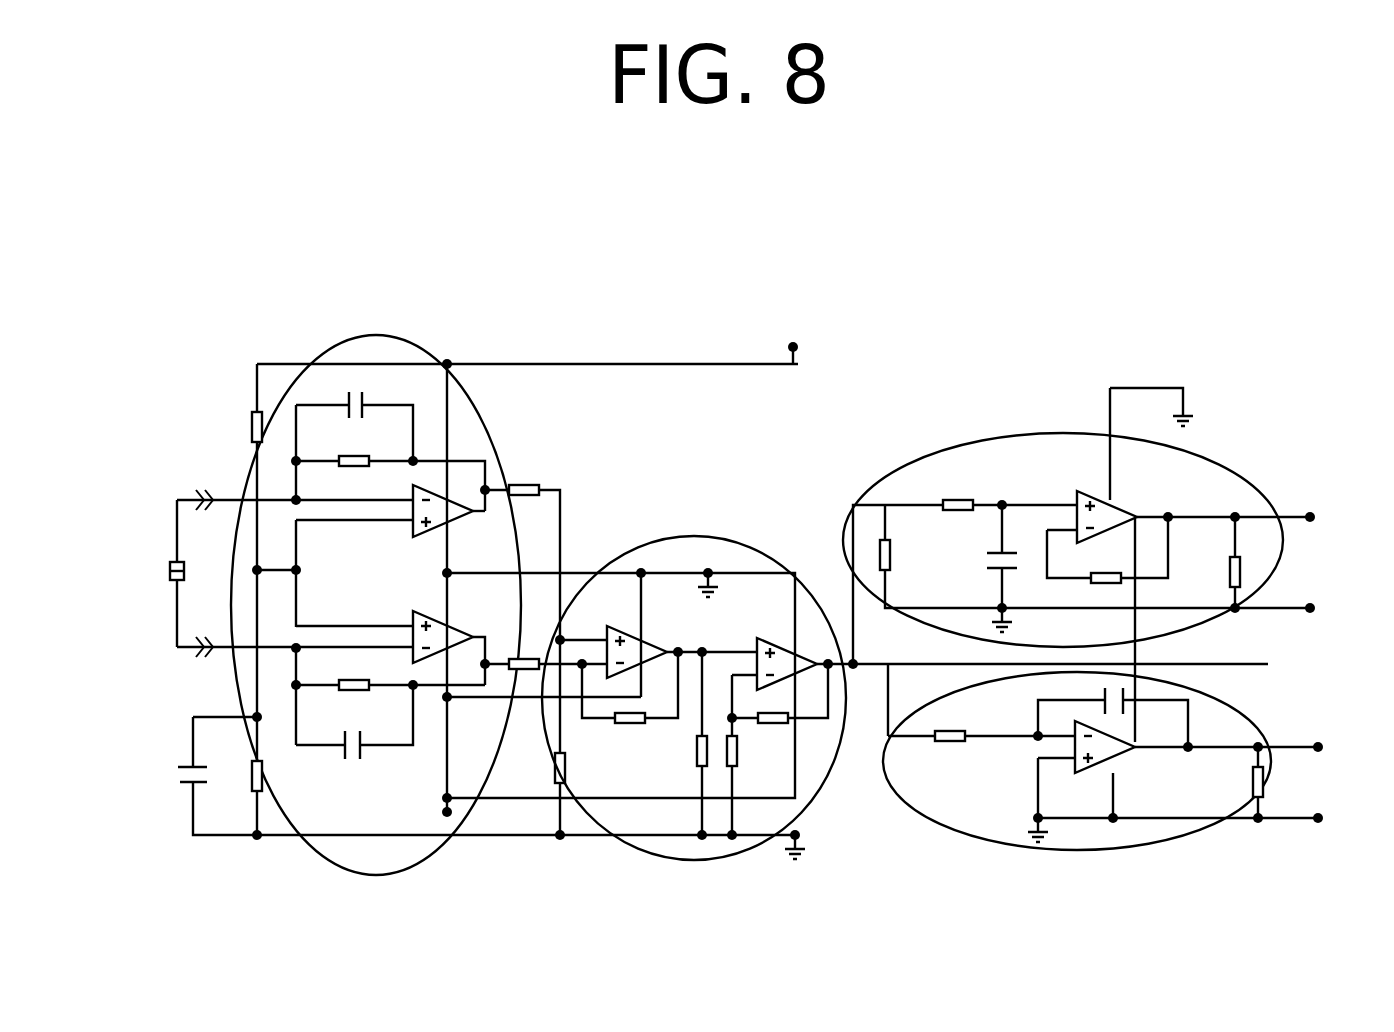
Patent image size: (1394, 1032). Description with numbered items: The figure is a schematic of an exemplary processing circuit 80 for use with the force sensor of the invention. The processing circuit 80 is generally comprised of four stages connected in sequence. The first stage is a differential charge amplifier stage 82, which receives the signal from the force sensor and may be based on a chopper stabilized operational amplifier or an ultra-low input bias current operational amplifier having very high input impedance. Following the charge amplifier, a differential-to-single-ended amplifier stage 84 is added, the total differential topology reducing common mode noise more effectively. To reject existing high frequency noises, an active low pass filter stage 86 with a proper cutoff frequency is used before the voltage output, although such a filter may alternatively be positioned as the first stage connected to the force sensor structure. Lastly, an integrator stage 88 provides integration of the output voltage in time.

The processing circuit 80 is at (1112, 257).
The differential charge amplifier stage 82 is at (333, 340).
The differential-to-single-ended amplifier stage 84 is at (707, 535).
The active low pass filter stage 86 is at (995, 433).
The integrator stage 88 is at (980, 848).